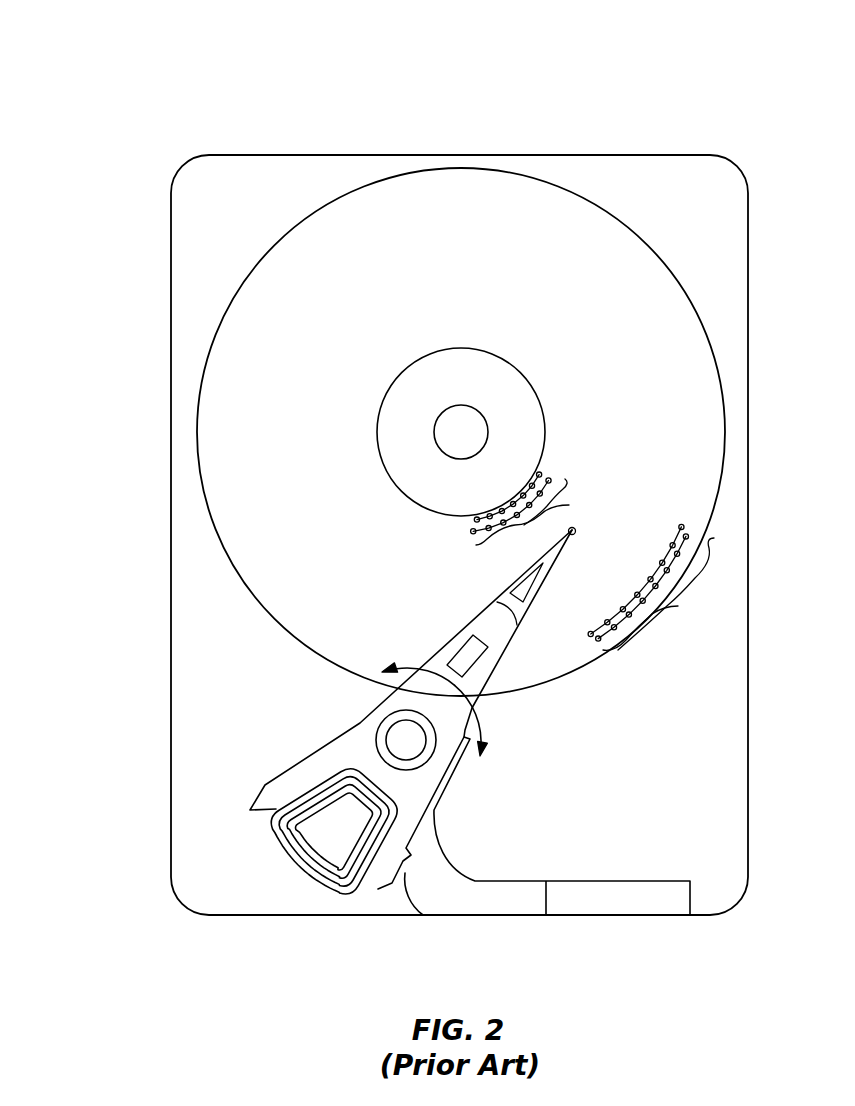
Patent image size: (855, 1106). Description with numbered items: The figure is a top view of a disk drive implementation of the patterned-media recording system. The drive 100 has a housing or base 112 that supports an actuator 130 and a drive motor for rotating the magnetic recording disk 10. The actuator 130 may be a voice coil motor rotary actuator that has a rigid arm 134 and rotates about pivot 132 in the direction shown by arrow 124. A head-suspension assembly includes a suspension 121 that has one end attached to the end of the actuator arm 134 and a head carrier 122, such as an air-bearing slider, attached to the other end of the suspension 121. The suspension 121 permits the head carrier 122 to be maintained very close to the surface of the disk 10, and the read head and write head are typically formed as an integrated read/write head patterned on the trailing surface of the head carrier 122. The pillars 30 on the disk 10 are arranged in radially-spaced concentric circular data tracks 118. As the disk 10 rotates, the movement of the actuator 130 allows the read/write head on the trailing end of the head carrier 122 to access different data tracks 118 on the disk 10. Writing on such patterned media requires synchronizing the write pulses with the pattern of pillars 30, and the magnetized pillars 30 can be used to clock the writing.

The drive 100 is at (170, 74).
The housing or base 112 is at (675, 155).
The magnetic recording disk 10 is at (322, 208).
The data tracks 118 is at (468, 516).
The pillars 30 is at (595, 564).
The suspension 121 is at (502, 598).
The head carrier 122 is at (576, 534).
The arrow 124 is at (480, 721).
The rigid arm 134 is at (446, 648).
The pivot 132 is at (398, 739).
The actuator 130 is at (268, 796).